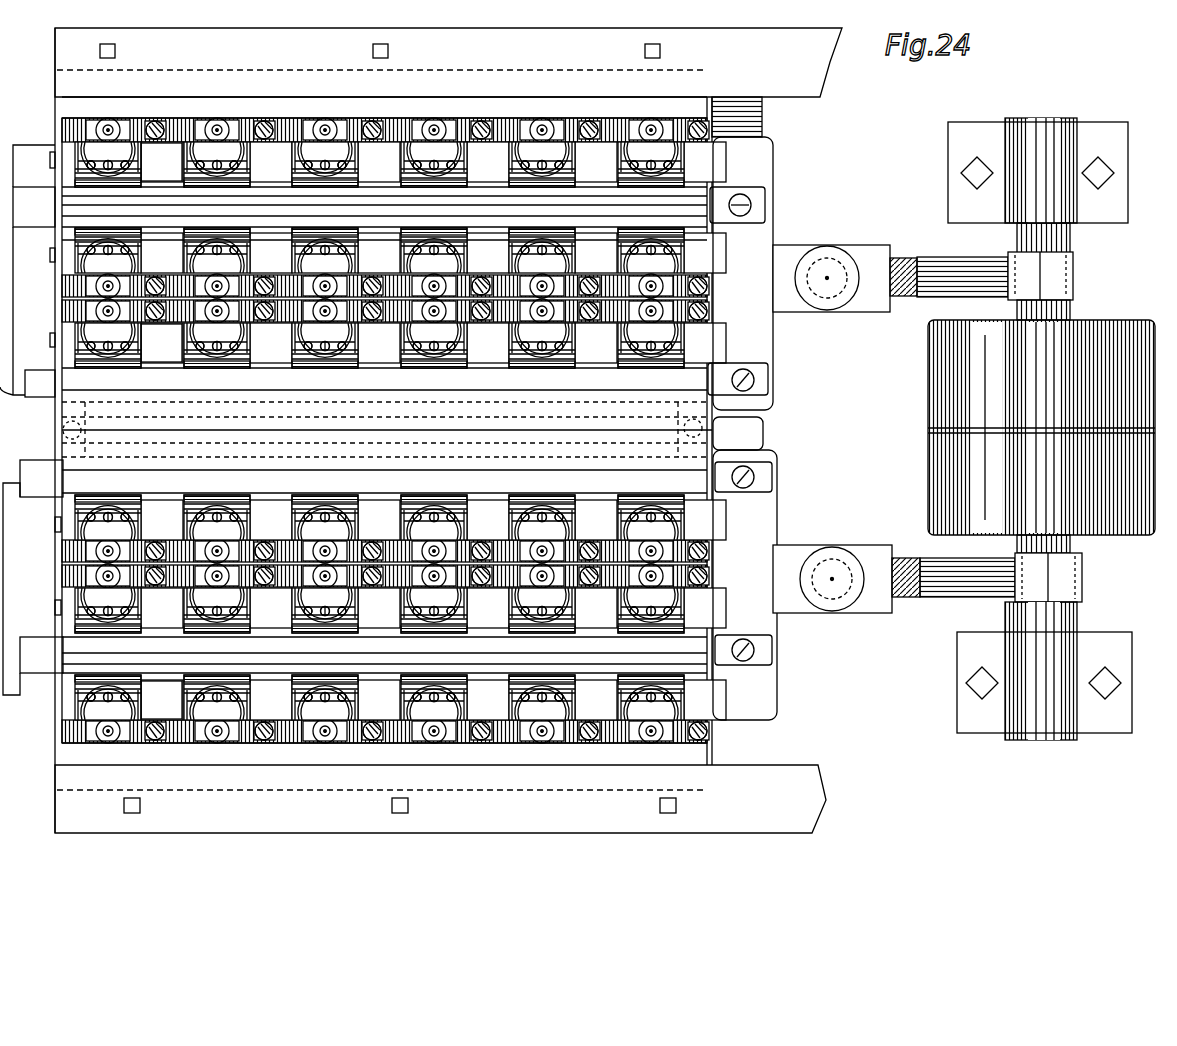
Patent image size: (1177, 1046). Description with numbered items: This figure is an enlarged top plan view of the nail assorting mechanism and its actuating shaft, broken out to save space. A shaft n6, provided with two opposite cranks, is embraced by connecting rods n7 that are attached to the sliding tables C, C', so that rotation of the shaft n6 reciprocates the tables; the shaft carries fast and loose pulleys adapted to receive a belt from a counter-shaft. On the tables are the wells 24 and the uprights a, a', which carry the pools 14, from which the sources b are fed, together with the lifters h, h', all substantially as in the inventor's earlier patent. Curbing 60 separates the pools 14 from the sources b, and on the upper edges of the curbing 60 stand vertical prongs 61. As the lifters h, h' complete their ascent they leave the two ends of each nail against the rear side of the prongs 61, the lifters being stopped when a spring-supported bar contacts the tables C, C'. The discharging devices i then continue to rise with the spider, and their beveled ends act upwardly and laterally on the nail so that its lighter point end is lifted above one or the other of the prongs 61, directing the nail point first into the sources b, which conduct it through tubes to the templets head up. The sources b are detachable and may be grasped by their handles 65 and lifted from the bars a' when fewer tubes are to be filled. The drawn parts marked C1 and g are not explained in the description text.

The vertical prongs 61 is at (78, 142).
The handles 65 is at (157, 127).
The curbing 60 is at (375, 431).
The pools 14 is at (107, 184).
The wells 24 is at (384, 423).
The discharging devices i is at (108, 162).
The lifters h is at (373, 431).
The lifters h' is at (382, 431).
The sources b is at (235, 128).
The uprights a is at (384, 106).
The uprights a' is at (451, 750).
The sliding table C is at (535, 449).
The bracket C1 is at (770, 212).
The sliding table C' is at (384, 226).
The frame plate g is at (808, 88).
The shaft n6 is at (1070, 239).
The connecting rods n7 is at (940, 257).